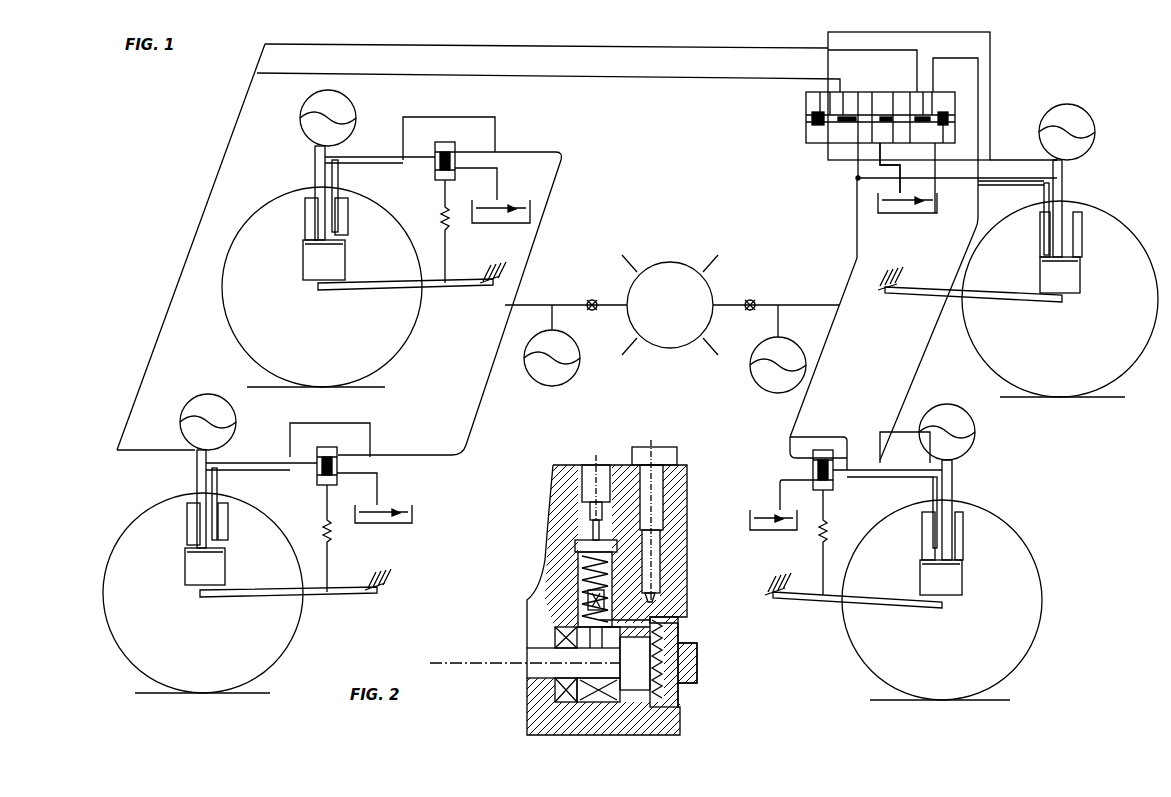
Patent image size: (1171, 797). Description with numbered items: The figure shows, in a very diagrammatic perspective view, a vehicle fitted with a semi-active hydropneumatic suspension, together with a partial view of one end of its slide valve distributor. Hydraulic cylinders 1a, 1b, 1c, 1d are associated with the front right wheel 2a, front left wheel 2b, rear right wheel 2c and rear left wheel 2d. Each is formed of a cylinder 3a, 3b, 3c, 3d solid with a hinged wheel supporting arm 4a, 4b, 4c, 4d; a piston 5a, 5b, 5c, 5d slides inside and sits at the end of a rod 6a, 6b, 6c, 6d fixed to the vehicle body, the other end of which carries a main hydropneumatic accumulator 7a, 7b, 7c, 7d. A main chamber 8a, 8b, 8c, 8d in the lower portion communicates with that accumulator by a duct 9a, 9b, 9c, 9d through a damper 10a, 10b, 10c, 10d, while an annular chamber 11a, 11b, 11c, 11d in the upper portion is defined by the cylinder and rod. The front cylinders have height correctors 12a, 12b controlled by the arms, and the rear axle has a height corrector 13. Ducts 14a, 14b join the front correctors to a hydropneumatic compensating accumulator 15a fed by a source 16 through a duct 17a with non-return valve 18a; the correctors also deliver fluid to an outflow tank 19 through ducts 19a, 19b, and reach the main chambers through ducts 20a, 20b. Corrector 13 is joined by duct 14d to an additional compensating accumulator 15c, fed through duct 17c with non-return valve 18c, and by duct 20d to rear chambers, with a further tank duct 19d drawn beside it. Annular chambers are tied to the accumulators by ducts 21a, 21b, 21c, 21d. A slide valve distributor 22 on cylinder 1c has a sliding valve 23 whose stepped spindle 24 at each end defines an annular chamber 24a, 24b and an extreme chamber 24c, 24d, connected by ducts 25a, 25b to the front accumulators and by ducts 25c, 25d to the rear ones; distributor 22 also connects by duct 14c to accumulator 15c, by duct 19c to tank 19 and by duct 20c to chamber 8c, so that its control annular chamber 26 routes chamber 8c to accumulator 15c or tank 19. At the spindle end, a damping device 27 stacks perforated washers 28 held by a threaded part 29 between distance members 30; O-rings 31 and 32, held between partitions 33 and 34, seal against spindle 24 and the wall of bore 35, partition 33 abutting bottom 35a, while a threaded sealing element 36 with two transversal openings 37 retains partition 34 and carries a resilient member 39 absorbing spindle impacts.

In FIG. 1, the hydraulic cylinder 1a is at (190, 150).
In FIG. 1, the hydraulic cylinder 1b is at (170, 472).
In FIG. 1, the hydraulic cylinder 1c is at (1085, 172).
In FIG. 1, the hydraulic cylinder 1d is at (985, 482).
In FIG. 1, the front right wheel 2a is at (398, 358).
In FIG. 1, the front left wheel 2b is at (280, 642).
In FIG. 1, the rear right wheel 2c is at (1098, 405).
In FIG. 1, the rear left wheel 2d is at (1028, 605).
In FIG. 1, the cylinder 3a is at (345, 258).
In FIG. 1, the cylinder 3b is at (225, 568).
In FIG. 1, the cylinder 3c is at (1080, 275).
In FIG. 1, the cylinder 3d is at (962, 575).
In FIG. 1, the wheel supporting arm 4a is at (445, 288).
In FIG. 1, the wheel supporting arm 4b is at (342, 595).
In FIG. 1, the wheel supporting arm 4c is at (1018, 300).
In FIG. 1, the wheel supporting arm 4d is at (886, 605).
In FIG. 1, the piston 5a is at (305, 248).
In FIG. 1, the piston 5b is at (187, 553).
In FIG. 1, the piston 5c is at (1042, 260).
In FIG. 1, the piston 5d is at (922, 565).
In FIG. 1, the rod 6a is at (315, 175).
In FIG. 1, the rod 6b is at (207, 485).
In FIG. 1, the rod 6c is at (1065, 195).
In FIG. 1, the rod 6d is at (955, 475).
In FIG. 1, the main hydropneumatic accumulator 7a is at (352, 113).
In FIG. 1, the main hydropneumatic accumulator 7b is at (235, 428).
In FIG. 1, the main hydropneumatic accumulator 7c is at (1095, 115).
In FIG. 1, the main hydropneumatic accumulator 7d is at (975, 430).
In FIG. 1, the main chamber 8a is at (310, 262).
In FIG. 1, the main chamber 8b is at (190, 575).
In FIG. 1, the main chamber 8c is at (1075, 280).
In FIG. 1, the main chamber 8d is at (948, 598).
In FIG. 1, the duct 9a is at (305, 218).
In FIG. 1, the duct 9b is at (187, 522).
In FIG. 1, the duct 9c is at (1082, 230).
In FIG. 1, the duct 9d is at (963, 530).
In FIG. 1, the damper 10a is at (330, 150).
In FIG. 1, the damper 10b is at (212, 462).
In FIG. 1, the damper 10c is at (1075, 155).
In FIG. 1, the damper 10d is at (975, 452).
In FIG. 1, the annular chamber 11a is at (338, 210).
In FIG. 1, the annular chamber 11b is at (220, 520).
In FIG. 1, the annular chamber 11c is at (1044, 228).
In FIG. 1, the annular chamber 11d is at (933, 525).
In FIG. 1, the height corrector 12a is at (520, 135).
In FIG. 1, the height corrector 12b is at (385, 445).
In FIG. 1, the height corrector 13 is at (822, 448).
In FIG. 1, the duct 14a is at (540, 210).
In FIG. 1, the duct 14b is at (478, 420).
In FIG. 1, the duct 14c is at (855, 252).
In FIG. 1, the duct 14d is at (810, 395).
In FIG. 1, the hydropneumatic compensating accumulator 15a is at (555, 395).
In FIG. 1, the additional hydropneumatic compensating accumulator 15c is at (748, 388).
In FIG. 1, the source of fluid under pressure 16 is at (672, 262).
In FIG. 1, the duct 17a is at (590, 298).
In FIG. 1, the duct 17c is at (740, 280).
In FIG. 1, the non-return valve 18a is at (592, 312).
In FIG. 1, the non-return valve 18c is at (750, 312).
In FIG. 1, the outflow tank 19 is at (525, 202).
In FIG. 1, the duct 19a is at (488, 205).
In FIG. 1, the duct 19b is at (380, 490).
In FIG. 1, the duct 19c is at (880, 180).
In FIG. 1, the return line 19d is at (760, 500).
In FIG. 1, the duct 20a is at (432, 175).
In FIG. 1, the duct 20b is at (312, 478).
In FIG. 1, the duct 20c is at (983, 187).
In FIG. 1, the duct 20d is at (840, 487).
In FIG. 1, the duct 21a is at (475, 117).
In FIG. 1, the duct 21b is at (315, 423).
In FIG. 1, the duct 21c is at (977, 218).
In FIG. 1, the duct 21d is at (878, 445).
In FIG. 1, the slide valve distributor 22 is at (904, 118).
In FIG. 2, the slide valve distributor 22 is at (612, 455).
In FIG. 1, the sliding valve 23 is at (895, 110).
In FIG. 1, the shouldered or stepped spindle 24 is at (806, 120).
In FIG. 2, the shouldered or stepped spindle 24 is at (660, 620).
In FIG. 1, the annular chamber 24a is at (905, 170).
In FIG. 2, the annular chamber 24a is at (540, 665).
In FIG. 1, the annular chamber 24b is at (845, 147).
In FIG. 1, the extreme chamber 24c is at (806, 115).
In FIG. 1, the extreme chamber 24d is at (940, 92).
In FIG. 2, the extreme chamber 24d is at (680, 680).
In FIG. 1, the duct 25a is at (700, 46).
In FIG. 1, the duct 25b is at (650, 80).
In FIG. 1, the duct 25c is at (945, 50).
In FIG. 1, the duct 25d is at (918, 350).
In FIG. 1, the control annular chamber 26 is at (868, 110).
In FIG. 2, the damping device 27 is at (548, 528).
In FIG. 2, the perforated washers 28 is at (585, 600).
In FIG. 2, the threaded part 29 is at (575, 545).
In FIG. 2, the distance members 30 is at (580, 580).
In FIG. 2, the O-ring 31 is at (557, 638).
In FIG. 2, the O-ring 32 is at (585, 695).
In FIG. 2, the partition 33 is at (557, 688).
In FIG. 2, the partition 34 is at (665, 550).
In FIG. 2, the bore 35 is at (590, 710).
In FIG. 2, the bottom of bore 35a is at (570, 630).
In FIG. 2, the threaded sealing element 36 is at (698, 655).
In FIG. 2, the transversal openings 37 is at (665, 700).
In FIG. 2, the resilient member 39 is at (665, 635).